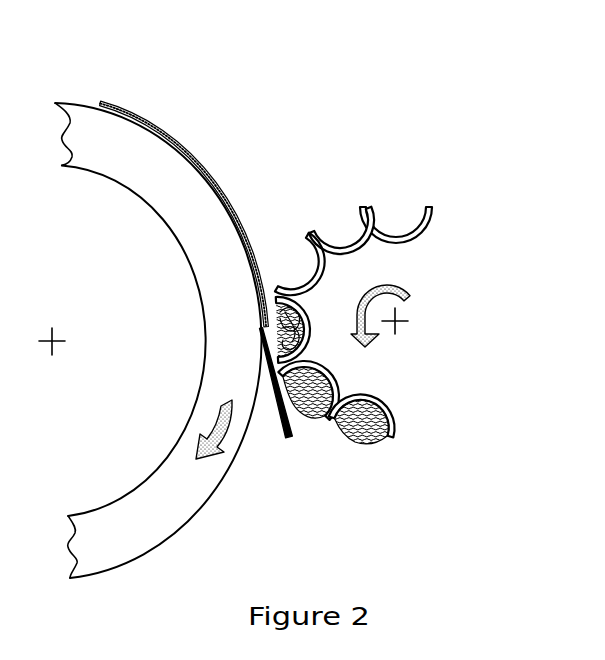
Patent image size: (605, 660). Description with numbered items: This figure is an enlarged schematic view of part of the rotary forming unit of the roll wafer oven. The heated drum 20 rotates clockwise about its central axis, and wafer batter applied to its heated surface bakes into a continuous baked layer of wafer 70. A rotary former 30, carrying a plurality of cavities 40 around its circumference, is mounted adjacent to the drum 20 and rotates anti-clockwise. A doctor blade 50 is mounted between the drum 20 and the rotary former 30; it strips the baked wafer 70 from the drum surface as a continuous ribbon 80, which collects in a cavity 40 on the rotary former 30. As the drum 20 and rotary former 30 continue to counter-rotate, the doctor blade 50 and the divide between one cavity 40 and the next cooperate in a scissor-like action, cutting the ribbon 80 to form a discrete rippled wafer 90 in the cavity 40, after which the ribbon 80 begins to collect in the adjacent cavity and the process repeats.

The heated drum 20 is at (80, 103).
The rotary former 30 is at (334, 312).
The cavities 40 is at (405, 217).
The doctor blade 50 is at (283, 428).
The baked layer of wafer 70 is at (182, 145).
The continuous ribbon 80 is at (284, 324).
The rippled wafer 90 is at (368, 440).